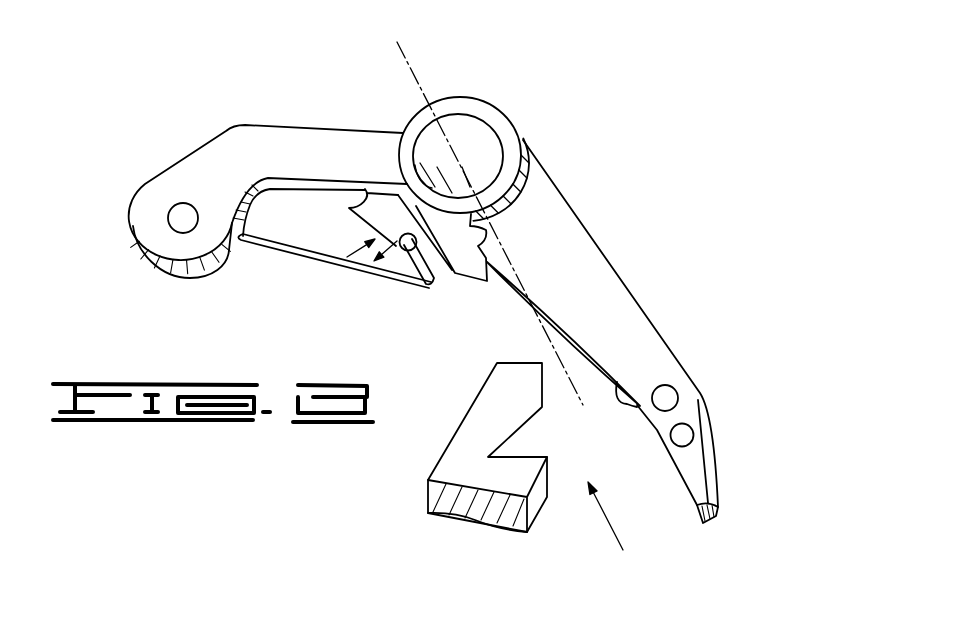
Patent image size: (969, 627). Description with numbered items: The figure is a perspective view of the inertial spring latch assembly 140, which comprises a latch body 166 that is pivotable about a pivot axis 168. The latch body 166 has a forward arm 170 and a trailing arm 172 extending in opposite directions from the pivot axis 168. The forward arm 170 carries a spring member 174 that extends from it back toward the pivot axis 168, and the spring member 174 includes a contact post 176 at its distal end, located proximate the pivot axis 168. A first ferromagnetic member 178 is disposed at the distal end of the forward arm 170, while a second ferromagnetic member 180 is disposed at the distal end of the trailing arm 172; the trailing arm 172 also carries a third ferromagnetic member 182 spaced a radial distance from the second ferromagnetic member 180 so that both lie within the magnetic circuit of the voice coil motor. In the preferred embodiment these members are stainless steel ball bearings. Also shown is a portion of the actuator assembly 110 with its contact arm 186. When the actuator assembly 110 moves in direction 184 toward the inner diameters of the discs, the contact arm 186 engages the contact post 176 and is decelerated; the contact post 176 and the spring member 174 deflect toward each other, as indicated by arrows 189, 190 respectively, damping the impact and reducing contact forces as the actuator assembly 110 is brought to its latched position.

The actuator assembly 110 is at (450, 433).
The inertial spring latch assembly 140 is at (373, 97).
The latch body 166 is at (527, 178).
The pivot axis 168 is at (418, 78).
The forward arm 170 is at (205, 163).
The trailing arm 172 is at (602, 282).
The spring member 174 is at (233, 250).
The contact post 176 is at (427, 290).
The first ferromagnetic member 178 is at (183, 218).
The second ferromagnetic member 180 is at (667, 397).
The third ferromagnetic member 182 is at (682, 435).
The direction of actuator movement 184 is at (613, 533).
The contact arm 186 is at (430, 512).
The deflection arrow of contact post 189 is at (393, 242).
The deflection arrow of spring member 190 is at (315, 257).